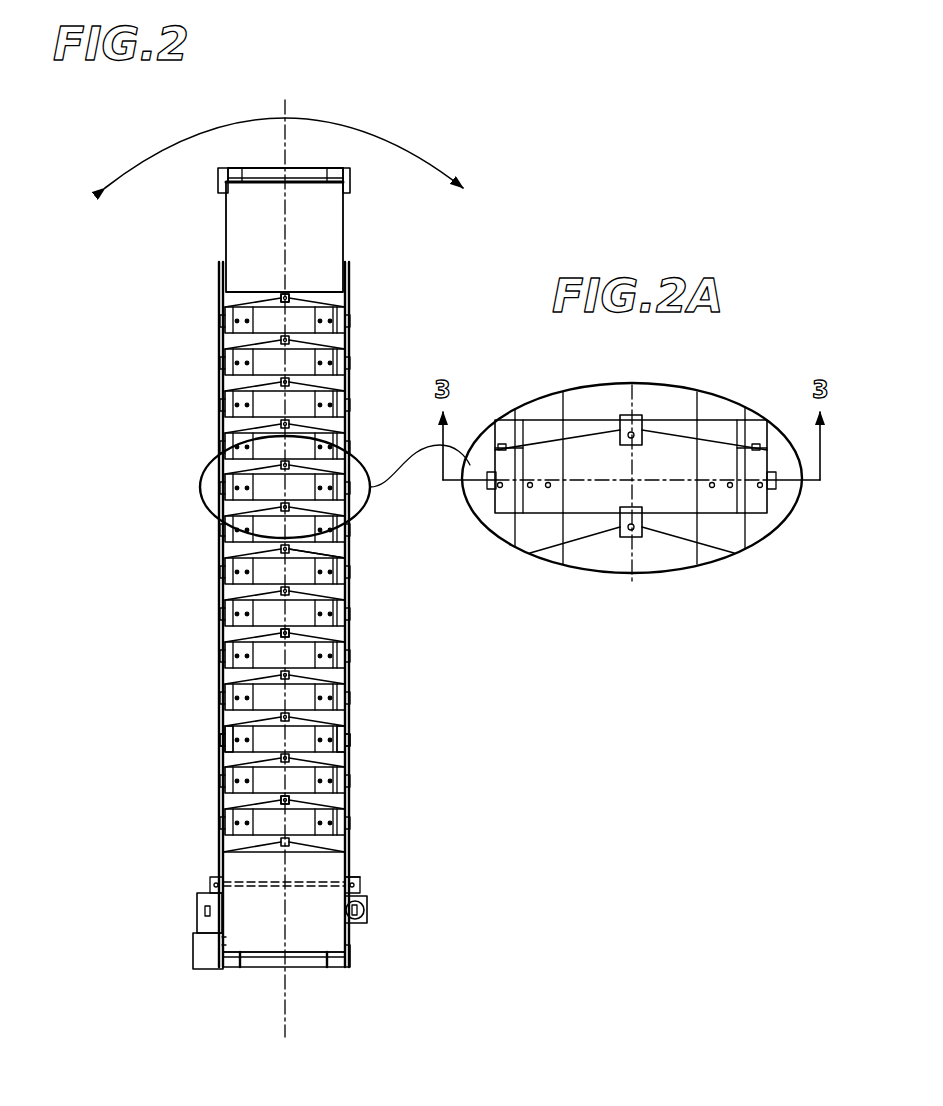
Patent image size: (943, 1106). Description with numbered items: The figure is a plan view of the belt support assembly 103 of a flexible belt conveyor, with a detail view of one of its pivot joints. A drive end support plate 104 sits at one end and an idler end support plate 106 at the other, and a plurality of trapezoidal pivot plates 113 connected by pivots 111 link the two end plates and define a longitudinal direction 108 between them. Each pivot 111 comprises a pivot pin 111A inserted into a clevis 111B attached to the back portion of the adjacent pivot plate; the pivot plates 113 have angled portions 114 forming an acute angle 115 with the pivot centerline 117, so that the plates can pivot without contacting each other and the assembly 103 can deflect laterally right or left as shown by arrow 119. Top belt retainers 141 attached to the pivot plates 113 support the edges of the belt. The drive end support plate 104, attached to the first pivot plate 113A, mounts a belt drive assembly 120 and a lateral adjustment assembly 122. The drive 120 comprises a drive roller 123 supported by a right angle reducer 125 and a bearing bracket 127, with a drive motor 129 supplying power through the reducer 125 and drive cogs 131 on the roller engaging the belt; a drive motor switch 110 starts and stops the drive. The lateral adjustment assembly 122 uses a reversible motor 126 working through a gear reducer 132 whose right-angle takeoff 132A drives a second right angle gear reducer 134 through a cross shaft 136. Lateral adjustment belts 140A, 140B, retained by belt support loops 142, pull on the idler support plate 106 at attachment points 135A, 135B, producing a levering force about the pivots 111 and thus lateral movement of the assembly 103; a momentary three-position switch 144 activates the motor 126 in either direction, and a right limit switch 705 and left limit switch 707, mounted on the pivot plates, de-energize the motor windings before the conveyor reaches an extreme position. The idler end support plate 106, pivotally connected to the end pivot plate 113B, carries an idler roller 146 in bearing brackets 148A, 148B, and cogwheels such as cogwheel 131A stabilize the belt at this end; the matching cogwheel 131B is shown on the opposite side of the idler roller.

In FIG. 2, the belt support assembly 103 is at (112, 327).
In FIG. 2, the drive end support plate 104 is at (350, 945).
In FIG. 2, the idler end support plate 106 is at (343, 235).
In FIG. 2, the longitudinal direction 108 is at (288, 108).
In FIG. 2, the drive motor switch 110 is at (197, 915).
In FIG. 2, the pivot 111 is at (284, 595).
In FIG. 2A, the pivot 111 is at (618, 420).
In FIG. 2A, the pivot pin 111A is at (640, 418).
In FIG. 2A, the clevis 111B is at (650, 438).
In FIG. 2, the pivot plate 113 is at (330, 592).
In FIG. 2A, the pivot plate 113 is at (700, 440).
In FIG. 2, the first pivot plate 113A is at (330, 800).
In FIG. 2, the end pivot plate 113B is at (320, 300).
In FIG. 2A, the angled portion 114 is at (697, 538).
In FIG. 2A, the acute angle 115 is at (645, 561).
In FIG. 2A, the pivot centerline 117 is at (640, 585).
In FIG. 2, the arrow 119 is at (430, 156).
In FIG. 2, the belt drive assembly 120 is at (150, 928).
In FIG. 2, the lateral adjustment assembly 122 is at (380, 900).
In FIG. 2, the drive roller 123 is at (262, 968).
In FIG. 2, the right angle reducer 125 is at (193, 952).
In FIG. 2, the reversible motor 126 is at (350, 925).
In FIG. 2, the bearing bracket 127 is at (348, 967).
In FIG. 2, the drive motor 129 is at (197, 928).
In FIG. 2, the drive cog 131 is at (240, 968).
In FIG. 2, the cogwheel 131A is at (328, 168).
In FIG. 2, the second crossbar end 131B is at (243, 168).
In FIG. 2, the gear reducer 132 is at (370, 912).
In FIG. 2, the right-angle takeoff 132A is at (362, 878).
In FIG. 2, the second right angle gear reducer 134 is at (210, 885).
In FIG. 2, the attachment point 135A is at (349, 266).
In FIG. 2, the attachment point 135B is at (219, 266).
In FIG. 2, the cross shaft 136 is at (250, 882).
In FIG. 2, the lateral adjustment belt 140A is at (349, 710).
In FIG. 2, the lateral adjustment belt 140B is at (219, 714).
In FIG. 2, the top belt retainer 141 is at (347, 552).
In FIG. 2A, the top belt retainer 141 is at (783, 502).
In FIG. 2, the belt support loop 142 is at (349, 740).
In FIG. 2, the momentary three-position switch 144 is at (362, 895).
In FIG. 2, the idler roller 146 is at (291, 167).
In FIG. 2, the bearing bracket 148A is at (350, 180).
In FIG. 2, the bearing bracket 148B is at (218, 180).
In FIG. 2A, the right limit switch 705 is at (745, 447).
In FIG. 2A, the left limit switch 707 is at (490, 447).